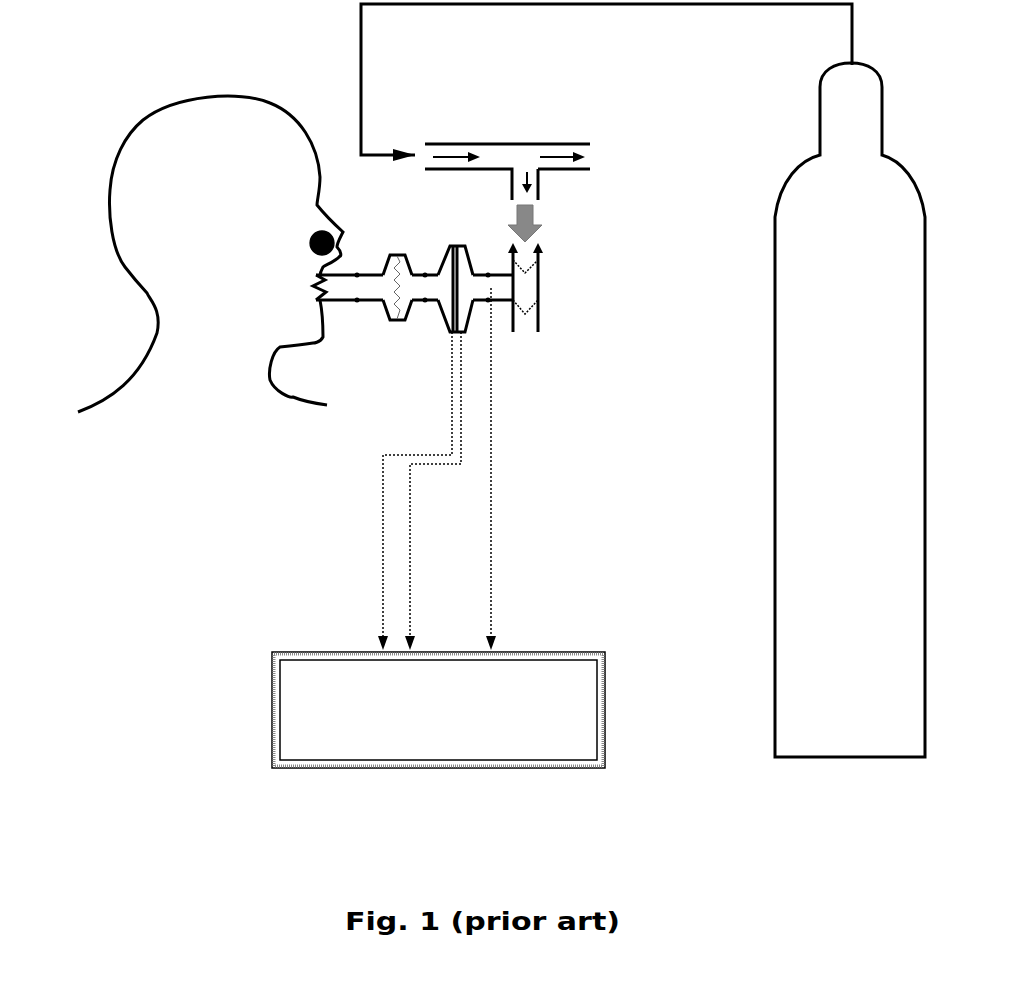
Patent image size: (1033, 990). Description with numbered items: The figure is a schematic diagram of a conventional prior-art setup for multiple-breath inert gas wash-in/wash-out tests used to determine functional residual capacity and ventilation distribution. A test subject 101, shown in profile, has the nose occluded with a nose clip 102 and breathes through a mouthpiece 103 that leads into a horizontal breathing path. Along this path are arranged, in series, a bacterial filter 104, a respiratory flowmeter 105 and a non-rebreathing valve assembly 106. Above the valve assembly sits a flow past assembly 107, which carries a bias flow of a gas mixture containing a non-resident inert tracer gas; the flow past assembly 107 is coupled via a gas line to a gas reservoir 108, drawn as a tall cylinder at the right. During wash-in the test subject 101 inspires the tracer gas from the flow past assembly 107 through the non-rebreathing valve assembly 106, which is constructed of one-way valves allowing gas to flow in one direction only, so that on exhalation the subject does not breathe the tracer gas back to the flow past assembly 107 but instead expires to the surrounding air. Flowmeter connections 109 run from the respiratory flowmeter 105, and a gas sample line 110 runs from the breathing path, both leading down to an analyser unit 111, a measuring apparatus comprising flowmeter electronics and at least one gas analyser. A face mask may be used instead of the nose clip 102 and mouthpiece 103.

The test subject 101 is at (218, 123).
The nose clip 102 is at (310, 238).
The mouthpiece 103 is at (315, 279).
The bacterial filter 104 is at (400, 322).
The respiratory flowmeter 105 is at (453, 333).
The non-rebreathing valve assembly 106 is at (543, 283).
The flow past assembly 107 is at (527, 143).
The gas reservoir 108 is at (850, 410).
The flowmeter connection 109 is at (382, 545).
The gas sample line 110 is at (491, 488).
The analyser unit 111 is at (438, 710).